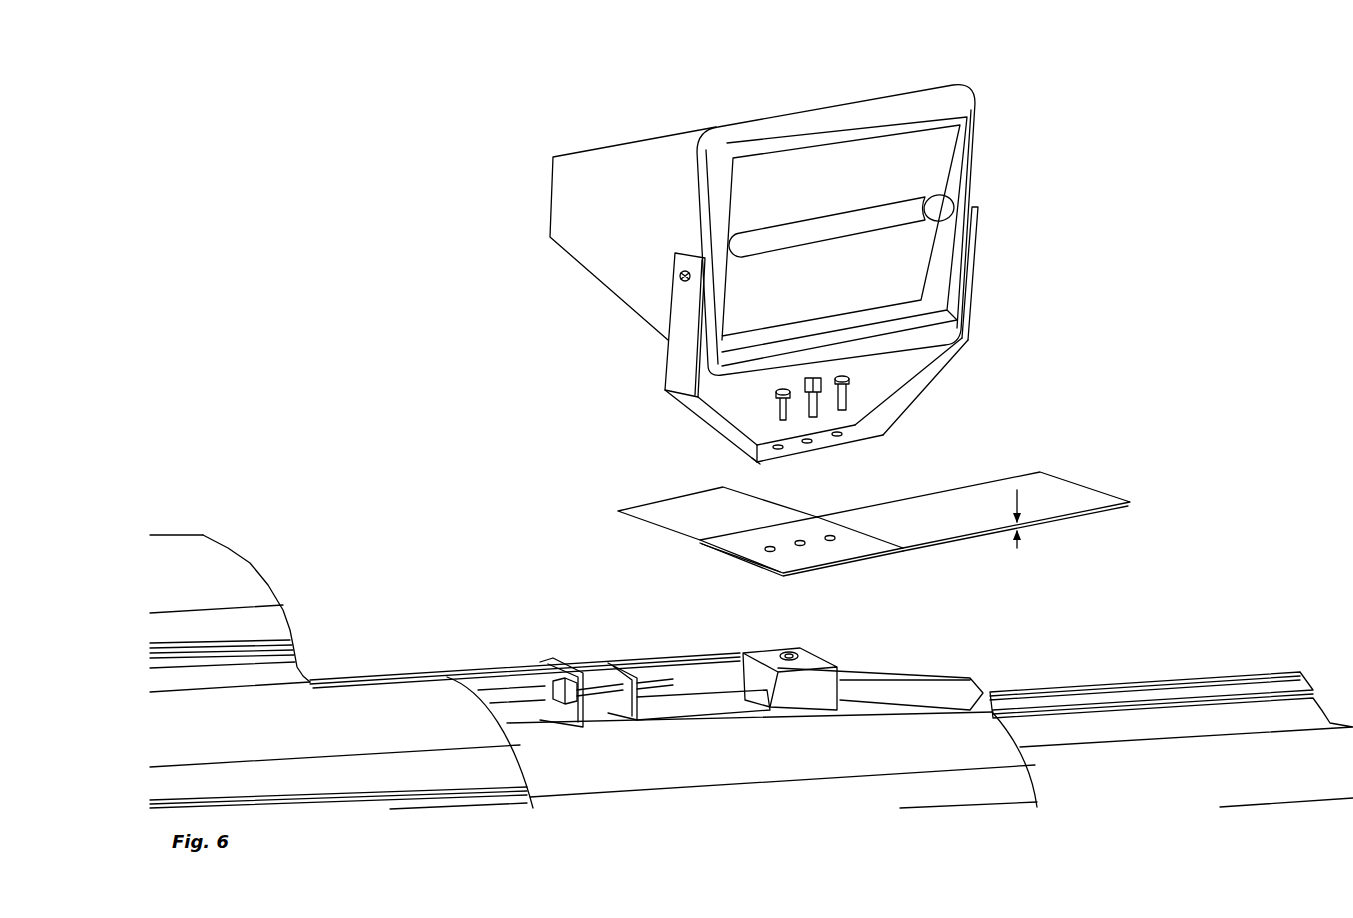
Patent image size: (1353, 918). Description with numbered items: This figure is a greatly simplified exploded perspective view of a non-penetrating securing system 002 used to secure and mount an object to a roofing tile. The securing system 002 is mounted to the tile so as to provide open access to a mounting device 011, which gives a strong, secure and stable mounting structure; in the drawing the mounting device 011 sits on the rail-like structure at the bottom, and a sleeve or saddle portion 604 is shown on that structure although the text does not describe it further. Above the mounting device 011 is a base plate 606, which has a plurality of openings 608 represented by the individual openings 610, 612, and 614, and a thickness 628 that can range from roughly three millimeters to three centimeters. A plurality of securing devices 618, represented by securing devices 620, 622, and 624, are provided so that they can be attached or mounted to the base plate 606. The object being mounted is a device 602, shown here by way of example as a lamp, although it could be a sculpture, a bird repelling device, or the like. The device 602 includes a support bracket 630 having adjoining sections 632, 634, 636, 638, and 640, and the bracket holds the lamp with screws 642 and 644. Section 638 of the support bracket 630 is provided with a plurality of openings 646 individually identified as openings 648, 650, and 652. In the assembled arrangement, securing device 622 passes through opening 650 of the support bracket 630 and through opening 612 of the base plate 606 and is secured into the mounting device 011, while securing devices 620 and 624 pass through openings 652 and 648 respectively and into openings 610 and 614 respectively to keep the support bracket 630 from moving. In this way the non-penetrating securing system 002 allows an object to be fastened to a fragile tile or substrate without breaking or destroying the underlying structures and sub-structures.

The device 602 is at (1140, 96).
The rail sleeve 604 is at (742, 742).
The base plate 606 is at (865, 535).
The plurality of openings 608 is at (735, 564).
The opening 610 is at (780, 551).
The opening 612 is at (815, 547).
The opening 614 is at (838, 542).
The plurality of securing devices 618 is at (850, 368).
The securing device 620 is at (778, 414).
The securing device 622 is at (806, 382).
The securing device 624 is at (840, 380).
The thickness 628 is at (1017, 548).
The support bracket 630 is at (983, 357).
The section 632 is at (686, 333).
The section 634 is at (712, 425).
The section 636 is at (862, 433).
The section 638 is at (927, 388).
The section 640 is at (978, 262).
The screw 642 is at (985, 193).
The screw 644 is at (678, 283).
The plurality of openings 646 is at (725, 453).
The opening 648 is at (843, 440).
The opening 650 is at (810, 445).
The opening 652 is at (782, 452).
The non-penetrating securing system 002 is at (985, 683).
The mounting device 011 is at (785, 652).